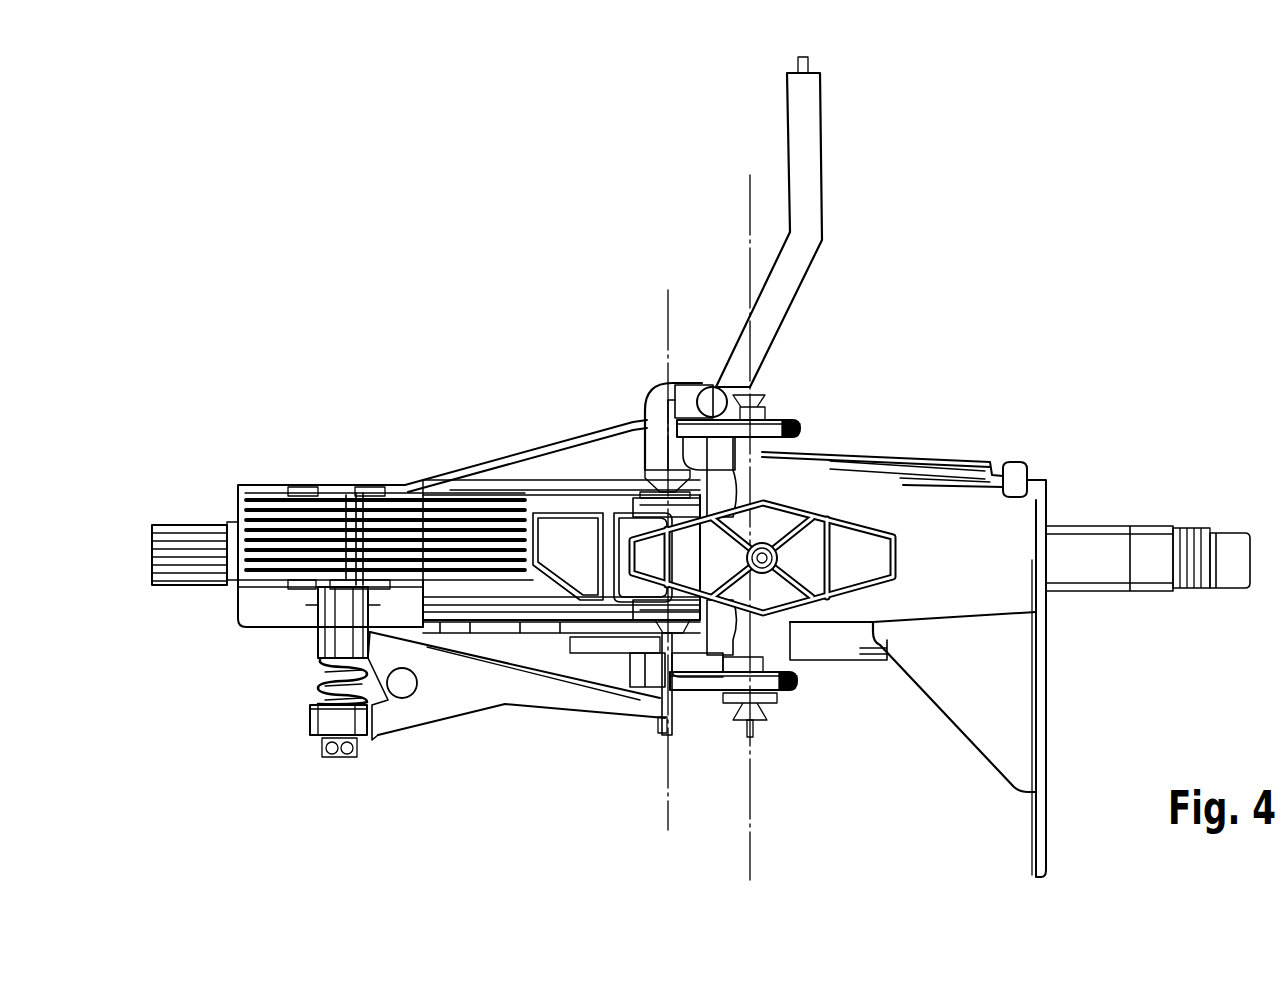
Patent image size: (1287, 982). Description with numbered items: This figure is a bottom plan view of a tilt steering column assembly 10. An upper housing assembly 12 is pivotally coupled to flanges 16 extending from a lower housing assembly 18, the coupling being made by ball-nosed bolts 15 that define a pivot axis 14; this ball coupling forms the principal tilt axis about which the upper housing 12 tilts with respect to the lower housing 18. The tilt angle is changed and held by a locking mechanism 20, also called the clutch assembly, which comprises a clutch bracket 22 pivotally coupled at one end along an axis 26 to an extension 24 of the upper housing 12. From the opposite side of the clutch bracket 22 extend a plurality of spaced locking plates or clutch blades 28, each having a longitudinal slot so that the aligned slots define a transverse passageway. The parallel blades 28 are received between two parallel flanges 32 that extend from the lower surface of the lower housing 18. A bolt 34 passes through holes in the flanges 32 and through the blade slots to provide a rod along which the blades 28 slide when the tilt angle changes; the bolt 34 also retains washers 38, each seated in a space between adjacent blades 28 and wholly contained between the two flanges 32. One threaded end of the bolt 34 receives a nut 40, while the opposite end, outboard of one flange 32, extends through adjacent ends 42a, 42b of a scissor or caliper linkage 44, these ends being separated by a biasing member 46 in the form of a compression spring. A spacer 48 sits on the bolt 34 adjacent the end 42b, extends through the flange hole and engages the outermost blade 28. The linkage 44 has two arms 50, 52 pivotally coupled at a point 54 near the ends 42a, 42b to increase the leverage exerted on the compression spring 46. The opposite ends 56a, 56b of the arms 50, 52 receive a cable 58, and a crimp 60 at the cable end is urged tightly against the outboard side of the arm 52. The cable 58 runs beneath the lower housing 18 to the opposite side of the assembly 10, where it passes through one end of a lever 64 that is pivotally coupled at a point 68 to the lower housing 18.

The steering column assembly 10 is at (997, 207).
The upper housing assembly 12 is at (964, 483).
The pivot axis 14 is at (748, 195).
The ball-nosed bolts 15 is at (778, 712).
The flanges 16 is at (798, 430).
The lower housing assembly 18 is at (398, 470).
The locking mechanism 20 is at (488, 486).
The clutch bracket 22 is at (604, 560).
The extension 24 is at (818, 520).
The axis 26 is at (666, 312).
The clutch blades 28 is at (258, 507).
The flanges 32 is at (379, 490).
The bolt 34 is at (320, 690).
The washers 38 is at (346, 515).
The nut 40 is at (327, 490).
The end of linkage 42a is at (306, 742).
The end of linkage 42b is at (323, 650).
The linkage 44 is at (583, 712).
The biasing member 46 is at (320, 672).
The spacer 48 is at (330, 610).
The arm 50 is at (412, 713).
The arm 52 is at (548, 700).
The pivot point 54 is at (412, 680).
The end of arm 56a is at (674, 700).
The end of arm 56b is at (692, 665).
The cable 58 is at (652, 682).
The crimp 60 is at (668, 720).
The lever 64 is at (812, 217).
The pivot point 68 is at (716, 385).